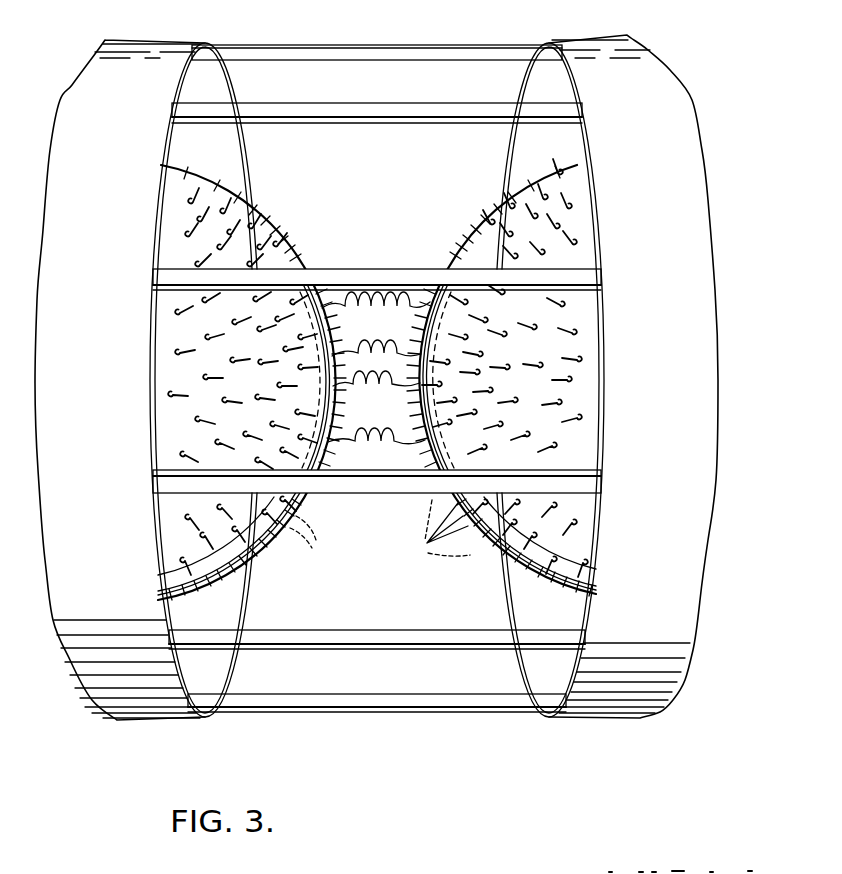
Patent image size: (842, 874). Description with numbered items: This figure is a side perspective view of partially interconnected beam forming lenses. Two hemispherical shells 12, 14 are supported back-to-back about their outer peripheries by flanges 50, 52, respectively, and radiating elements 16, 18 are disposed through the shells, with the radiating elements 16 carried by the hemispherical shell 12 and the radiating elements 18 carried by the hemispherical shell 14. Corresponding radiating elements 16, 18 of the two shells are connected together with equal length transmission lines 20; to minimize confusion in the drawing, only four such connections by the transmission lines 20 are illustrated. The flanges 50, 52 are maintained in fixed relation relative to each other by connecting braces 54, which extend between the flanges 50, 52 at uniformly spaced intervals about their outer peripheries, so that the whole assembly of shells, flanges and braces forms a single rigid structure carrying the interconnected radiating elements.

The hemispherical shell 12 is at (267, 564).
The hemispherical shell 14 is at (509, 574).
The radiating elements 16 is at (308, 528).
The radiating elements 18 is at (427, 543).
The equal length transmission lines 20 is at (367, 316).
The flange 50 is at (78, 103).
The flange 52 is at (675, 100).
The connecting braces 54 is at (408, 61).